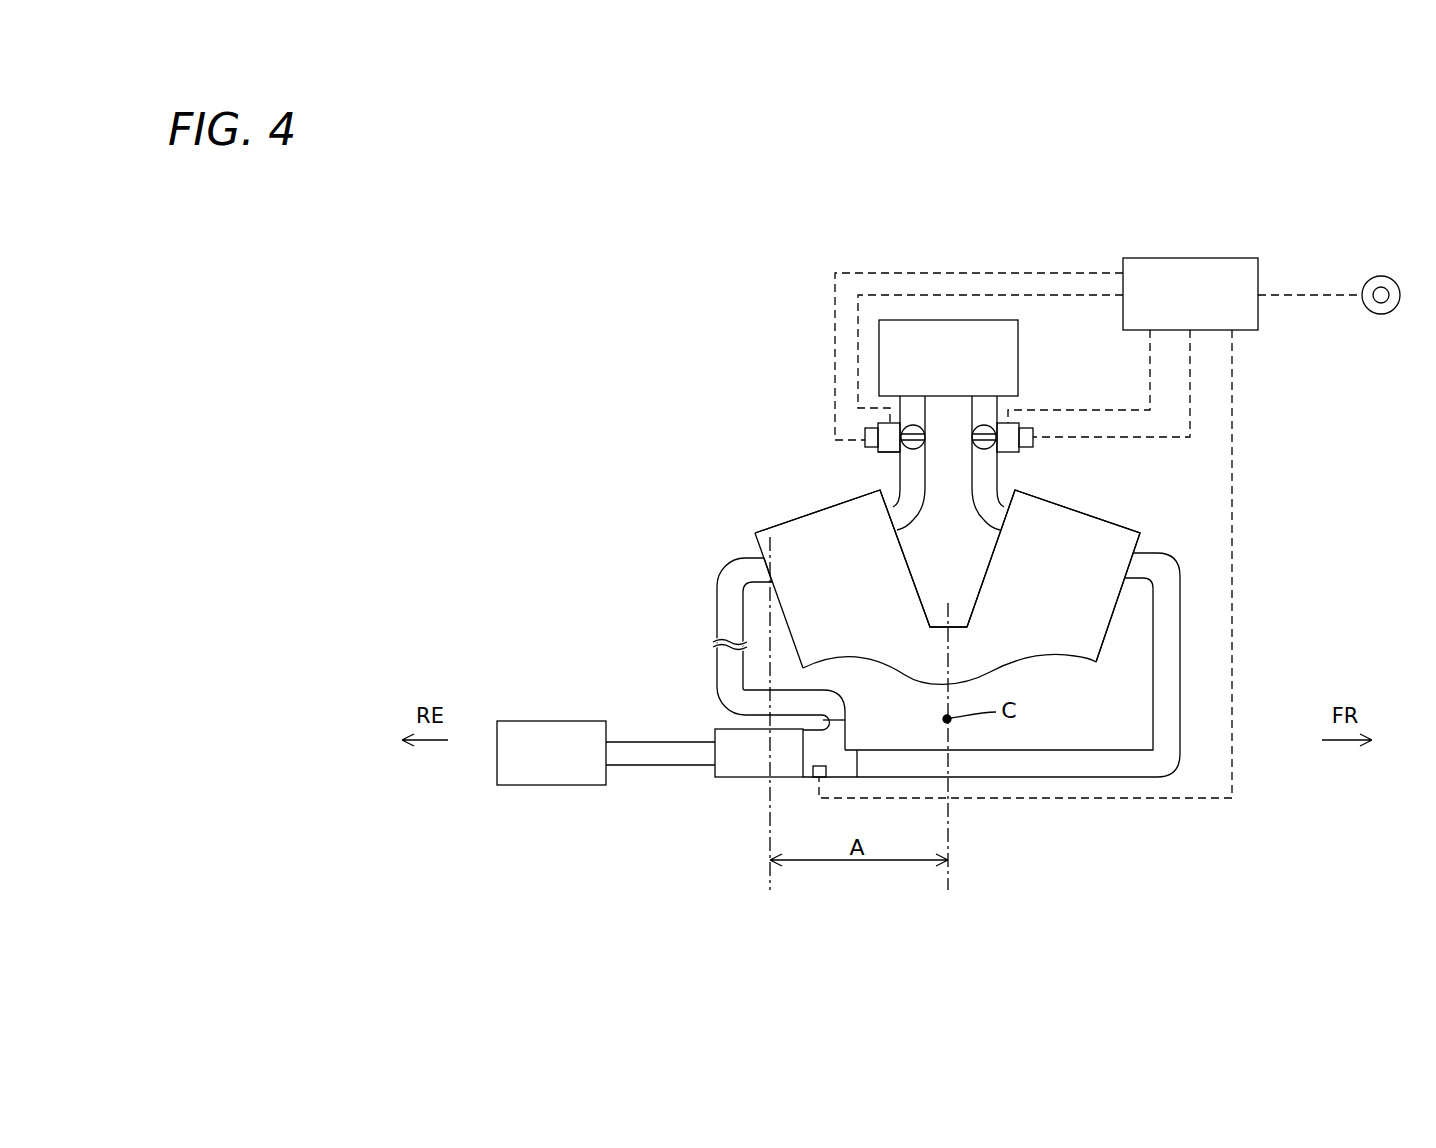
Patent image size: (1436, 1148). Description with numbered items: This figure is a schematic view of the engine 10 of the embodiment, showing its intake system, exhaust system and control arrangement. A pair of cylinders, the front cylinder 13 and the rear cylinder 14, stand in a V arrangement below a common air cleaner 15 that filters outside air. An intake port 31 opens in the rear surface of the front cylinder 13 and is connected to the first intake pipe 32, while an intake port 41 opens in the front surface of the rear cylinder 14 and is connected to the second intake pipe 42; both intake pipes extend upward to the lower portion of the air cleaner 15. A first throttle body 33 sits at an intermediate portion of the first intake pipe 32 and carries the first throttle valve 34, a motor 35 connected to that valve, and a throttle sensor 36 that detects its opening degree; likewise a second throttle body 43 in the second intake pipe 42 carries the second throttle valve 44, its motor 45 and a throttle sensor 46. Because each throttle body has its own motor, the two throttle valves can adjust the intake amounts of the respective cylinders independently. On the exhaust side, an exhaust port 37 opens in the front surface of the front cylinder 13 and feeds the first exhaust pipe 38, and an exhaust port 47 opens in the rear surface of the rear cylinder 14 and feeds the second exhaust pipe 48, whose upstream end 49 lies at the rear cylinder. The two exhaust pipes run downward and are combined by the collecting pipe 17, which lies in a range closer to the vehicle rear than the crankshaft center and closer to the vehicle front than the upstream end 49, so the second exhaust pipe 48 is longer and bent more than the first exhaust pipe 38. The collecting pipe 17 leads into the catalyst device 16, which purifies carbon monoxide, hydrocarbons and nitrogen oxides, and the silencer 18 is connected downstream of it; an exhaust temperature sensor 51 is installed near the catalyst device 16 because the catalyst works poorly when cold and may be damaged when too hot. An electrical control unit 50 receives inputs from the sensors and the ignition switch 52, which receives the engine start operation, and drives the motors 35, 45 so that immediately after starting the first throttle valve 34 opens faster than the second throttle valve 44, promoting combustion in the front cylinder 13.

The engine 10 is at (777, 415).
The front cylinder 13 is at (1087, 512).
The rear cylinder 14 is at (820, 509).
The air cleaner 15 is at (1018, 348).
The catalyst device 16 is at (757, 779).
The collecting pipe 17 is at (847, 740).
The silencer 18 is at (553, 721).
The intake port 31 is at (992, 525).
The first intake pipe 32 is at (971, 500).
The first throttle body 33 is at (1022, 405).
The first throttle valve 34 is at (974, 438).
The motor 35 is at (1016, 452).
The throttle sensor 36 is at (1033, 437).
The exhaust port 37 is at (1150, 560).
The first exhaust pipe 38 is at (1181, 650).
The intake port 41 is at (900, 522).
The second intake pipe 42 is at (925, 505).
The second throttle body 43 is at (867, 455).
The second throttle valve 44 is at (925, 428).
The motor 45 is at (880, 453).
The throttle sensor 46 is at (865, 438).
The exhaust port 47 is at (760, 566).
The second exhaust pipe 48 is at (716, 627).
The upstream end 49 is at (769, 563).
The electrical control unit (ECU) 50 is at (1233, 258).
The exhaust temperature sensor 51 is at (818, 779).
The ignition switch 52 is at (1380, 277).